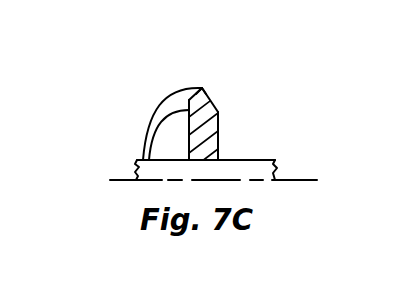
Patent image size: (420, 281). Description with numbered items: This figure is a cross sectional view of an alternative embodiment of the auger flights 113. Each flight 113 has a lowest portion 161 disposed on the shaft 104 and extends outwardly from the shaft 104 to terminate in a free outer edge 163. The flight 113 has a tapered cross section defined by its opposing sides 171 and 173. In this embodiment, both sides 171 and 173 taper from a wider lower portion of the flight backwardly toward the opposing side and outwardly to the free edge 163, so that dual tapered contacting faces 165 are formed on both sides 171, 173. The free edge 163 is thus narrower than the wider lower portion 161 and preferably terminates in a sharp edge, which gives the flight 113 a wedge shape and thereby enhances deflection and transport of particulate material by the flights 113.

The shaft 104 is at (255, 160).
The lowest portion 161 is at (136, 159).
The auger flights 113 is at (156, 110).
The opposing side 173 is at (156, 127).
The opposing side 171 is at (218, 128).
The tapered contacting face 165 is at (212, 103).
The free outer edge 163 is at (194, 95).